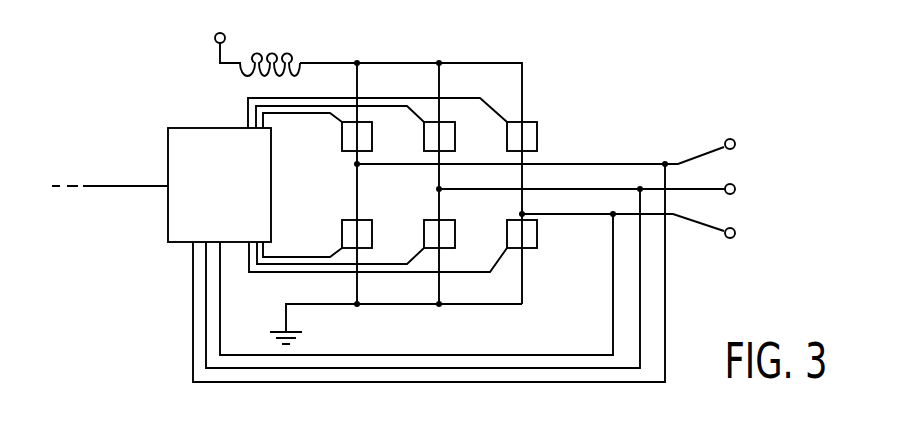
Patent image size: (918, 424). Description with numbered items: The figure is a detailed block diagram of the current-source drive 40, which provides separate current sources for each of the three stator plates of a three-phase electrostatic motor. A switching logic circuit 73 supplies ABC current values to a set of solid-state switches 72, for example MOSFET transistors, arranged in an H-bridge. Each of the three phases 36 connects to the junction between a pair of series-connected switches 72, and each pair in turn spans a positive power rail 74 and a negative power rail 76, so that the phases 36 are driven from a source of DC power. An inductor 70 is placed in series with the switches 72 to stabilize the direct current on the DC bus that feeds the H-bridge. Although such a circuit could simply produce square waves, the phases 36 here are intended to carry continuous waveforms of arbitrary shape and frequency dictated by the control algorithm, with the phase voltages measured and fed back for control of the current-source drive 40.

The phases 36 is at (678, 165).
The current-source drive 40 is at (742, 123).
The inductor 70 is at (272, 55).
The solid-state switches 72 is at (557, 242).
The switching logic circuit 73 is at (206, 193).
The positive power rail 74 is at (412, 62).
The negative power rail 76 is at (403, 306).